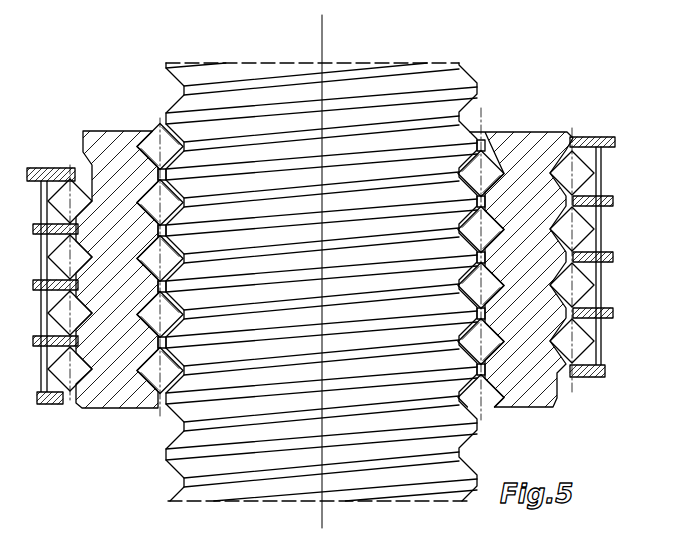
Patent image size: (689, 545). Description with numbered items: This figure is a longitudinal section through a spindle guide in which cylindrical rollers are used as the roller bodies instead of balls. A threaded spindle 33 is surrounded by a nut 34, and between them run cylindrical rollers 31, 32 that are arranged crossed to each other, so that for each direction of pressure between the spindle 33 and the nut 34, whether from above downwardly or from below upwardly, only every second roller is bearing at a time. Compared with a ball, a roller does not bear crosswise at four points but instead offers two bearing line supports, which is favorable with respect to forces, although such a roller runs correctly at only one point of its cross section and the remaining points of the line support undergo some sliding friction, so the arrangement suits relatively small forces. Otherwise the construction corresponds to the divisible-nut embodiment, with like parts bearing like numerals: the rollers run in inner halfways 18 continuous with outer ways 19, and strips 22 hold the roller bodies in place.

The spindle 33 is at (455, 77).
The roller 31 is at (522, 135).
The roller 32 is at (498, 134).
The inner halfway 18 is at (493, 398).
The nut 34 is at (548, 298).
The outer way 19 is at (602, 157).
The strip 22 is at (602, 237).